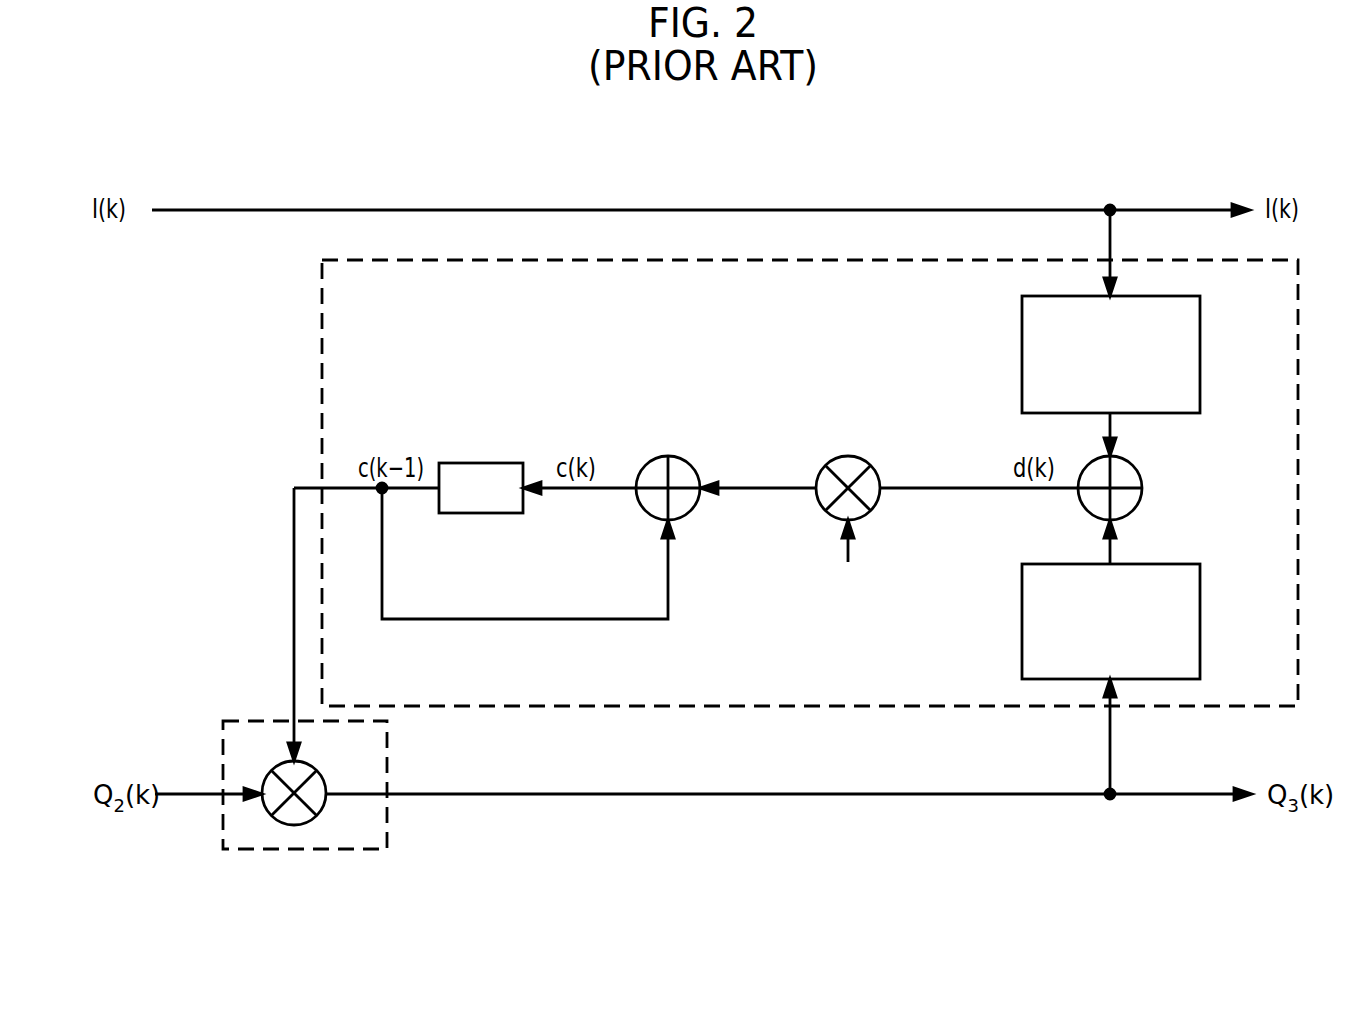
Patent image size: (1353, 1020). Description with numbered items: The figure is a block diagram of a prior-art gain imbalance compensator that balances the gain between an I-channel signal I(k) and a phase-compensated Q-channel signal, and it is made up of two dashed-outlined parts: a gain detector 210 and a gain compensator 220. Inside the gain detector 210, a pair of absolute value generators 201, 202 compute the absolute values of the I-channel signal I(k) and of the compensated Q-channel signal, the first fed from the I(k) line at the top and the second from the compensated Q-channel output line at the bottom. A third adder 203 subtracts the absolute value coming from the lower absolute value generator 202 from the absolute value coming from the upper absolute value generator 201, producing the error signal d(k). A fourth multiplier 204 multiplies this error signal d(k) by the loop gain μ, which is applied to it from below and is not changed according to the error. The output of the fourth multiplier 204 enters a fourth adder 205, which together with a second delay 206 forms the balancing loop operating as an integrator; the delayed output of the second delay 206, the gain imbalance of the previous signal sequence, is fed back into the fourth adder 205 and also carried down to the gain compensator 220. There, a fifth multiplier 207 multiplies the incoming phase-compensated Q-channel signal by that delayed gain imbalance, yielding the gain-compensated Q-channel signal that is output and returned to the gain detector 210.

The absolute value generator 201 is at (1200, 358).
The absolute value generator 202 is at (1200, 625).
The third adder 203 is at (1133, 470).
The fourth multiplier 204 is at (848, 457).
The fourth adder 205 is at (668, 457).
The second delay 206 is at (470, 463).
The fifth multiplier 207 is at (316, 772).
The gain detector 210 is at (400, 260).
The gain compensator 220 is at (236, 721).